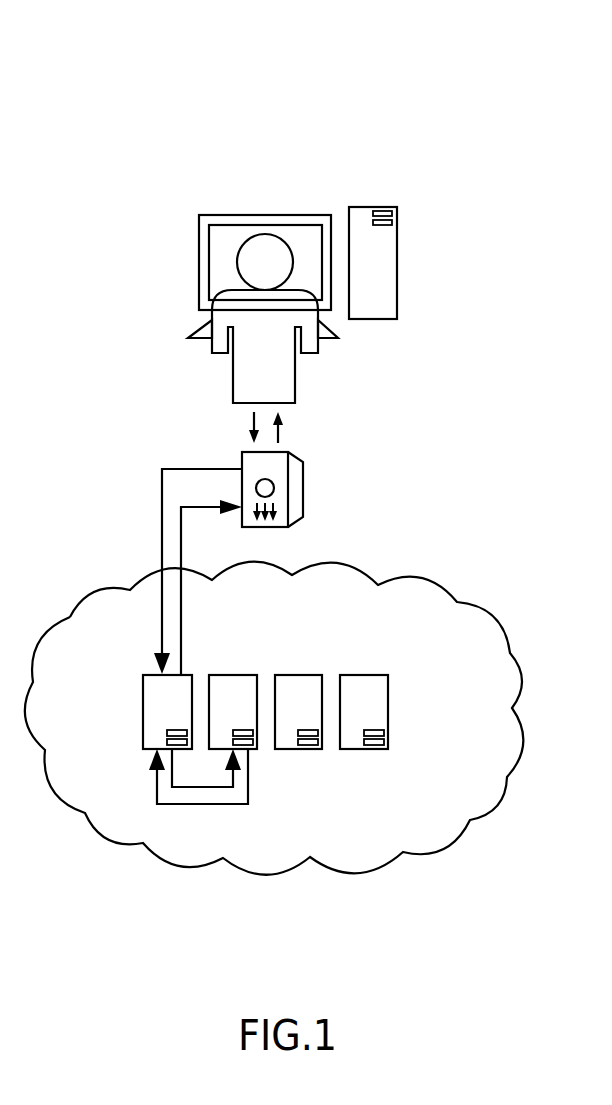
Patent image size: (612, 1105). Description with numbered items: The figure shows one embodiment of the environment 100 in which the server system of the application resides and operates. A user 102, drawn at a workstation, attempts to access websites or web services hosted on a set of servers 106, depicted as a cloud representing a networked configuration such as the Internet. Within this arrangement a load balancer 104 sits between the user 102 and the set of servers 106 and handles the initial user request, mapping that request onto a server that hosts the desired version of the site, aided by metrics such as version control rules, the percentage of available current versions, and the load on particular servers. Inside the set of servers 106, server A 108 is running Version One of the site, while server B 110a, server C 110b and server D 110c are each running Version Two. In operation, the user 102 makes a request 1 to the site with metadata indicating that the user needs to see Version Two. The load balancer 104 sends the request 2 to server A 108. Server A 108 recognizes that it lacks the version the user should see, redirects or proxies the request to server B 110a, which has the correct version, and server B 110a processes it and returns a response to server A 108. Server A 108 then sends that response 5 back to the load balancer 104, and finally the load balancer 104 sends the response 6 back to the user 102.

The environment 100 is at (297, 60).
The user 102 is at (398, 262).
The load balancer 104 is at (303, 462).
The set of servers 106 is at (398, 573).
The server A 108 is at (186, 674).
The server B 110a is at (248, 674).
The server C 110b is at (285, 674).
The server D 110c is at (372, 674).
The request 1 is at (247, 427).
The request sent to server A 2 is at (192, 571).
The response to load balancer 5 is at (211, 587).
The response to user 6 is at (285, 427).